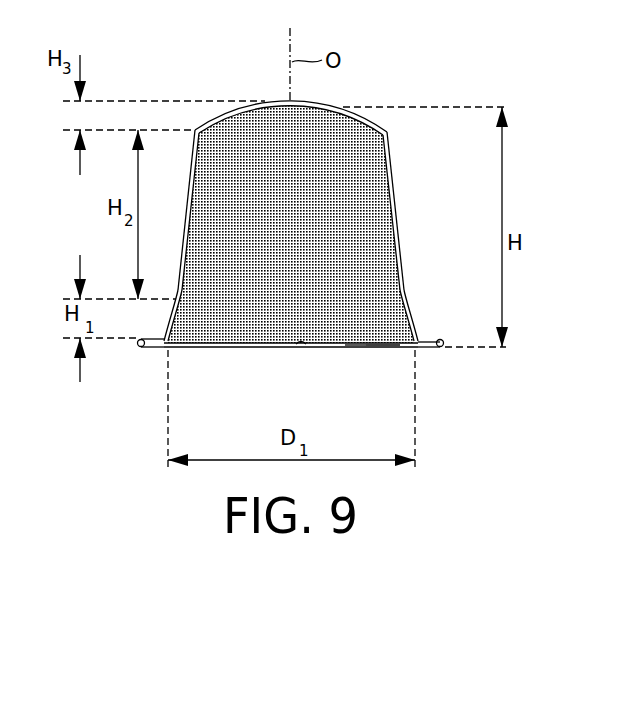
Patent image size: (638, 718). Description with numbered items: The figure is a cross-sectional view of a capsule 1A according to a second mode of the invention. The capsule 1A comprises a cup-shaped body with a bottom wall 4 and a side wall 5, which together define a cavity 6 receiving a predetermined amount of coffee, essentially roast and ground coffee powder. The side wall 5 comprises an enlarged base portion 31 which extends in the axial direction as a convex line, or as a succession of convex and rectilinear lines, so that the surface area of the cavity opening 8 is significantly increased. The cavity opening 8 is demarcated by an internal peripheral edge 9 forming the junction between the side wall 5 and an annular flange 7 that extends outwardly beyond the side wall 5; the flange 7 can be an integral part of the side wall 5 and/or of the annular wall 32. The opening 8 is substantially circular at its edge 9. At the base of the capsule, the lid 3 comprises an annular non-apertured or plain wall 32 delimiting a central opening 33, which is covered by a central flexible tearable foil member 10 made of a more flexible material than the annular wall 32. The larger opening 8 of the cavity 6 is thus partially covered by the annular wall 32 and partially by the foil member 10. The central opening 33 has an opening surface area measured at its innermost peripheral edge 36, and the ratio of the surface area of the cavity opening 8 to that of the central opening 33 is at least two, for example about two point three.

The capsule 1A is at (388, 67).
The lid 3 is at (400, 351).
The bottom wall 4 is at (223, 110).
The side wall 5 is at (410, 265).
The cavity 6 is at (369, 229).
The flange 7 is at (442, 351).
The cavity opening 8 is at (258, 330).
The internal peripheral edge 9 is at (180, 347).
The central flexible tearable foil member 10 is at (223, 347).
The enlarged base portion 31 is at (408, 322).
The annular non-apertured wall 32 is at (385, 348).
The central opening 33 is at (307, 348).
The innermost peripheral edge 36 is at (355, 348).